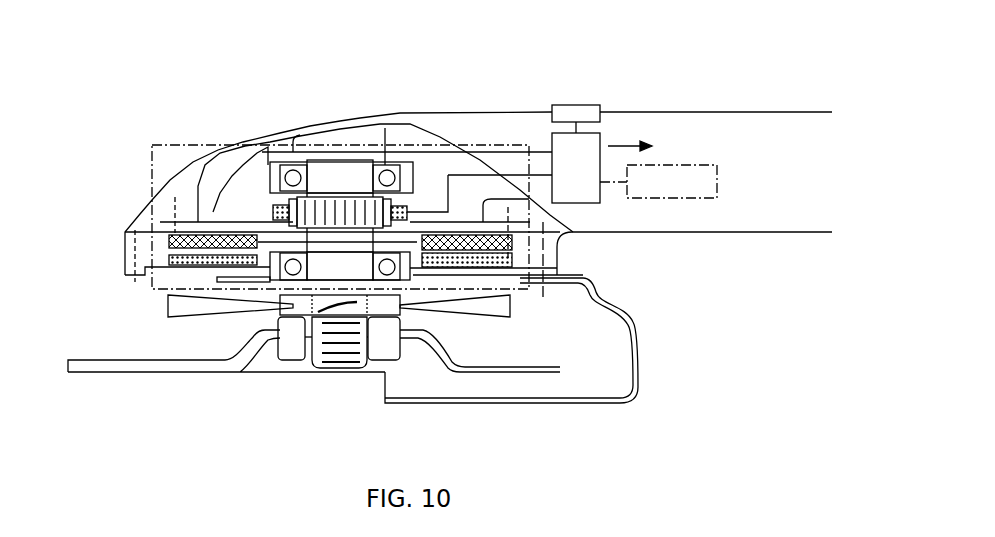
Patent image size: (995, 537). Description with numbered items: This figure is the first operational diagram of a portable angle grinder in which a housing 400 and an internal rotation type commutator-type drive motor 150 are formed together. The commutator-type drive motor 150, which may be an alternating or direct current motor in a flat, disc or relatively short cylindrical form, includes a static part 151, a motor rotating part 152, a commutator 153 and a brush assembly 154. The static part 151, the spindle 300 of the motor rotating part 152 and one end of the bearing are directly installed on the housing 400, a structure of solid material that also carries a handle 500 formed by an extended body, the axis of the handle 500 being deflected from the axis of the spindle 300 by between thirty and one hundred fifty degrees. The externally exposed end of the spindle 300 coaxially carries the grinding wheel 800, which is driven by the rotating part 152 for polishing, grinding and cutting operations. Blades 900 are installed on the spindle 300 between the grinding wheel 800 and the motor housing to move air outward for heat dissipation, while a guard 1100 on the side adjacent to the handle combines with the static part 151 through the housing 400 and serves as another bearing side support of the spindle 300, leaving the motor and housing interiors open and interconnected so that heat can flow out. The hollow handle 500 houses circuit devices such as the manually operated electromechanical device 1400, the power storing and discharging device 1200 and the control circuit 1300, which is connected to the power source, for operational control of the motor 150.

The commutator-type drive motor 150 is at (167, 145).
The static part 151 is at (167, 258).
The motor rotating part 152 is at (168, 243).
The commutator 153 is at (350, 212).
The brush assembly 154 is at (417, 207).
The spindle 300 is at (326, 268).
The housing 400 is at (282, 150).
The handle 500 is at (713, 112).
The grinding wheel 800 is at (100, 373).
The blade 900 is at (487, 312).
The guard 1100 is at (640, 362).
The power storing and discharging device 1200 is at (717, 175).
The control circuit 1300 is at (550, 147).
The manually operated electromechanical device 1400 is at (573, 103).